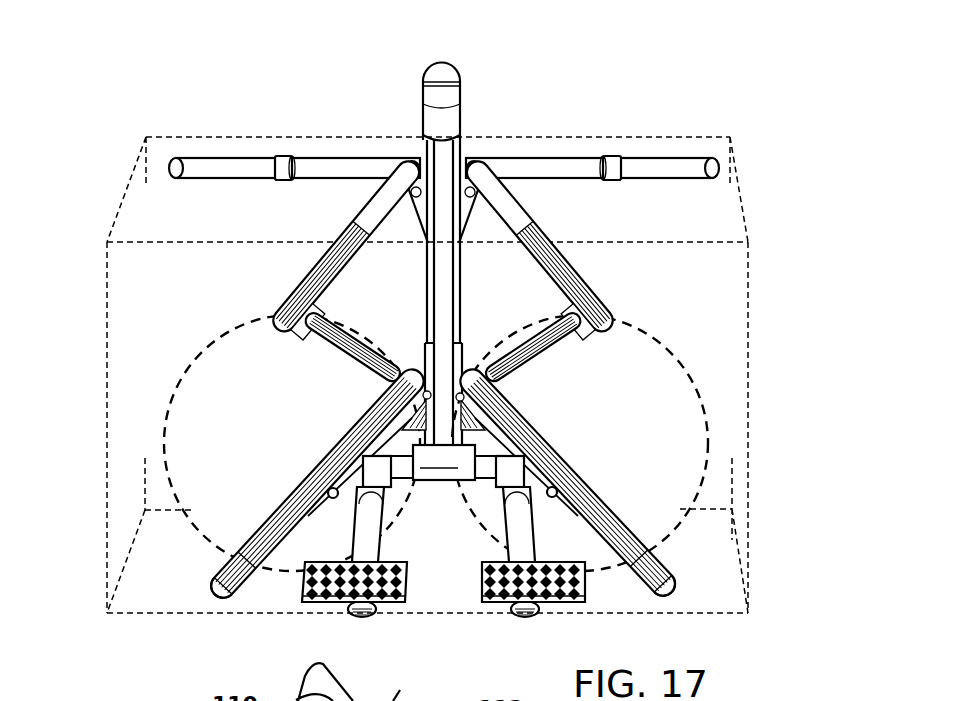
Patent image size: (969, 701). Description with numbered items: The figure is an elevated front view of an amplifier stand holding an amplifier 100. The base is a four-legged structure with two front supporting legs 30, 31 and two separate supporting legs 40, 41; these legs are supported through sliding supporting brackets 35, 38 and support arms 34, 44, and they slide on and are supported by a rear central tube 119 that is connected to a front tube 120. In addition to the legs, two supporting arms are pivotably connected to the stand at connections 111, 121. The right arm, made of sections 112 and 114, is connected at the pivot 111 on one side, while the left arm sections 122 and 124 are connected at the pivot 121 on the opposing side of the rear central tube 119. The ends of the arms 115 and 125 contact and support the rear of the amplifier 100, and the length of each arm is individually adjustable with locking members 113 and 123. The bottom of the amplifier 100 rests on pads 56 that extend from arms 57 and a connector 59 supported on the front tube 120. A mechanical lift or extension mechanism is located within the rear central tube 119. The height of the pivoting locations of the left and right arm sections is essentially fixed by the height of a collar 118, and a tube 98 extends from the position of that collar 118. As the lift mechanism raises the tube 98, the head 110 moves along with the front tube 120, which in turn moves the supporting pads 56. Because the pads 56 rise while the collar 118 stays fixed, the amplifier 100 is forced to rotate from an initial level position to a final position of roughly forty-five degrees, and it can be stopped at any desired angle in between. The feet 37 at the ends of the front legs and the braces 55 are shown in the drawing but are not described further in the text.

The amplifier 100 is at (760, 294).
The head 110 is at (423, 84).
The pivotable connection 111 is at (477, 161).
The right arm section 112 is at (548, 157).
The locking member 113 is at (608, 160).
The right arm section 114 is at (683, 159).
The arm end 115 is at (718, 165).
The rear central tube 119 is at (428, 277).
The front tube 120 is at (453, 296).
The pivotable connection 121 is at (412, 160).
The left arm section 122 is at (340, 157).
The locking member 123 is at (279, 158).
The left arm section 124 is at (190, 158).
The arm end 125 is at (168, 172).
The supporting leg 40 is at (318, 262).
The supporting leg 41 is at (582, 283).
The support arm 44 is at (342, 352).
The support arm 34 is at (497, 432).
The front supporting leg 30 is at (273, 518).
The front supporting leg 31 is at (627, 528).
The sliding supporting bracket 35 is at (329, 490).
The sliding supporting bracket 38 is at (556, 491).
The leg foot 37 is at (200, 605).
The brace 55 is at (305, 555).
The pad 56 is at (326, 600).
The arm 57 is at (505, 522).
The connector 59 is at (463, 482).
The tube 98 is at (365, 700).
The collar 118 is at (400, 696).